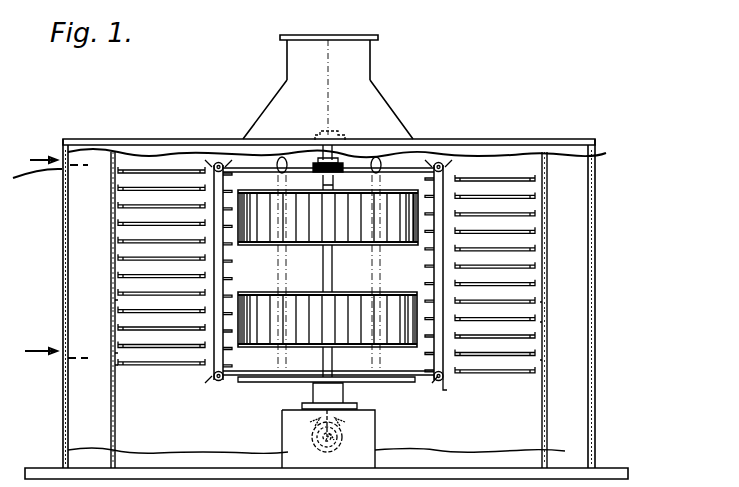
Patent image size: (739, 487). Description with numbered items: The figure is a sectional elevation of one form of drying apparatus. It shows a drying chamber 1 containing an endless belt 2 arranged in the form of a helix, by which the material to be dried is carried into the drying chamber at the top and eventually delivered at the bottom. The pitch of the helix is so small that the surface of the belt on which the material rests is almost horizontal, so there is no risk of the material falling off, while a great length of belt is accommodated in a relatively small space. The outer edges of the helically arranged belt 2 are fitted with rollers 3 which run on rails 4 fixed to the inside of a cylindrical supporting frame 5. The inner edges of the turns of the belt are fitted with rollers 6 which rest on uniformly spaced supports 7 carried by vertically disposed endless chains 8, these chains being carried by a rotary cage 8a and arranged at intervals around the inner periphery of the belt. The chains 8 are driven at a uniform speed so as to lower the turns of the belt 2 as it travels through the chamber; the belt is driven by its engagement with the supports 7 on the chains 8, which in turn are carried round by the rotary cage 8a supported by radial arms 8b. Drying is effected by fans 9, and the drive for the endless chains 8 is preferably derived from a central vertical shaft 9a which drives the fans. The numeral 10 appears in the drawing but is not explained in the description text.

The drying chamber 1 is at (96, 139).
The endless belt 2 is at (42, 193).
The rollers 3 is at (100, 252).
The rails 4 is at (115, 300).
The cylindrical supporting frame 5 is at (115, 430).
The rollers 6 is at (220, 162).
The supports 7 is at (222, 150).
The endless chains 8 is at (232, 183).
The rotary cage 8a is at (218, 380).
The radial arms 8b is at (400, 168).
The fans 9 is at (302, 215).
The central vertical shaft 9a is at (327, 272).
The shelf 10 is at (163, 200).